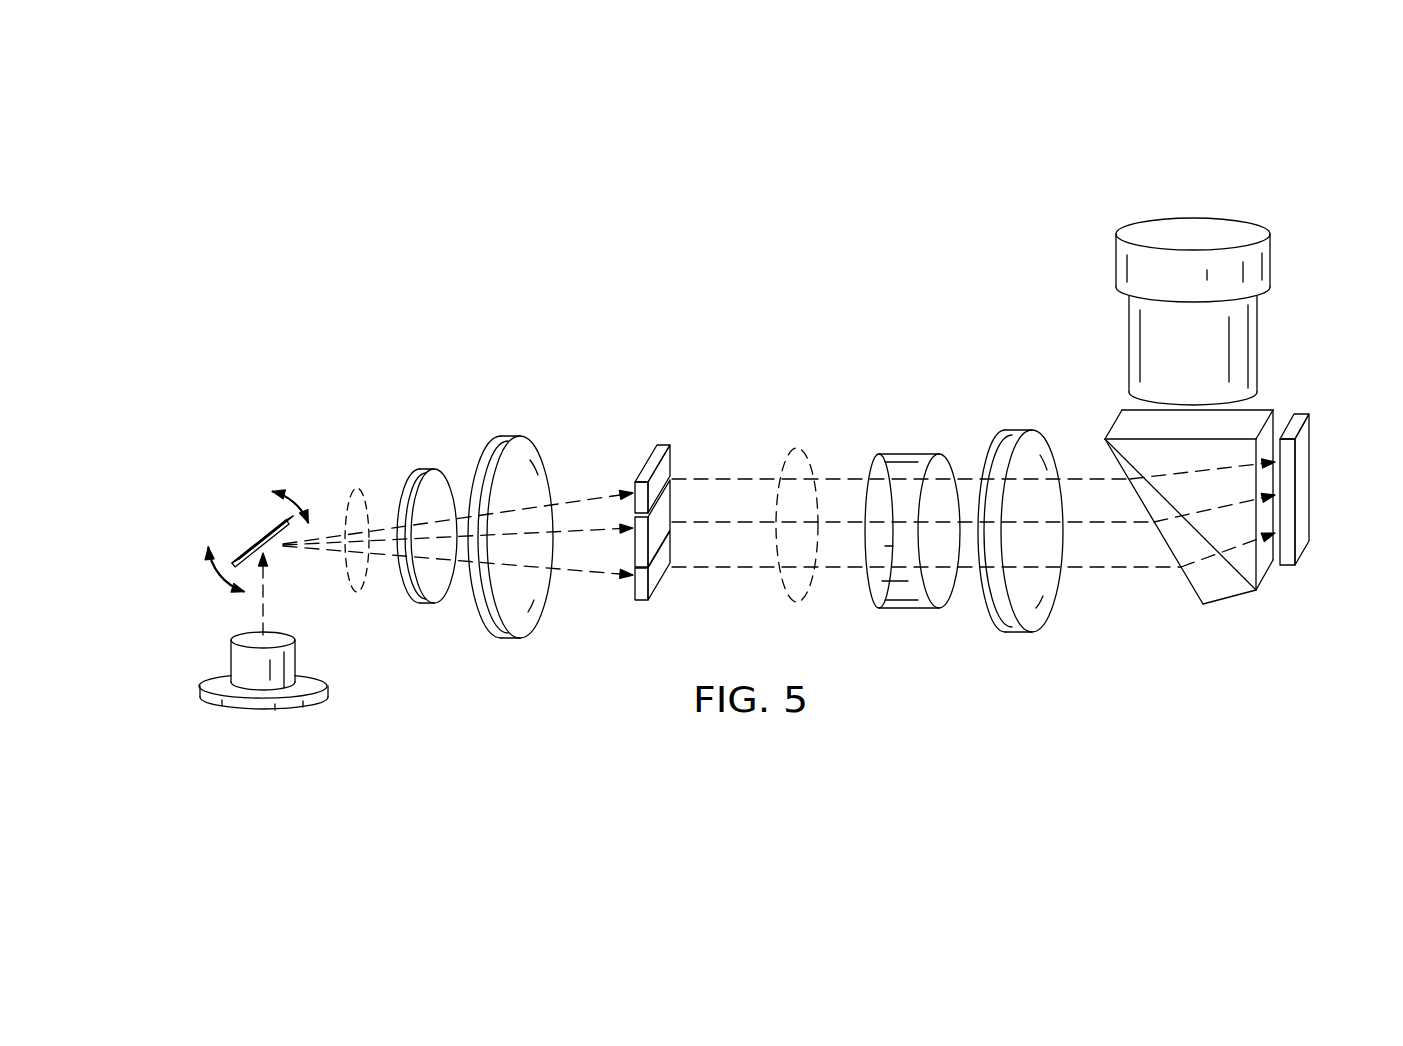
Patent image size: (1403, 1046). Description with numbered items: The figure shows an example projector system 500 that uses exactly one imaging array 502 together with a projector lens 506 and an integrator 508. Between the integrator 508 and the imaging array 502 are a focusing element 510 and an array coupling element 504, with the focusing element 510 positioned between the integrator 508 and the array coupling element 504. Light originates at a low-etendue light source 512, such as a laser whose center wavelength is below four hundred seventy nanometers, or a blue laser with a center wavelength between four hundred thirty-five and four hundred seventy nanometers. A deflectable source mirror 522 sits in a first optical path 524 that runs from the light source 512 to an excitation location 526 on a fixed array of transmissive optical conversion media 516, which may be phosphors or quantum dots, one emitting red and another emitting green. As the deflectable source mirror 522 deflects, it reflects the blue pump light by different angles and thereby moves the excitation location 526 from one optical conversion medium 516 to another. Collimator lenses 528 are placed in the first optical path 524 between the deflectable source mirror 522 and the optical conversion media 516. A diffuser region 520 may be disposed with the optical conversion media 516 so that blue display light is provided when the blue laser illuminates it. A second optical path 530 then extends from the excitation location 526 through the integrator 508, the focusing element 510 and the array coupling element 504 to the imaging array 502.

The projector system 500 is at (394, 360).
The imaging array 502 is at (1310, 470).
The array coupling element 504 is at (1232, 605).
The projector lens 506 is at (1259, 344).
The integrator 508 is at (912, 610).
The focusing element 510 is at (1018, 633).
The low-etendue light source 512 is at (200, 690).
The optical conversion media 516 is at (635, 483).
The diffuser region 520 is at (634, 588).
The deflectable source mirror 522 is at (250, 540).
The first optical path 524 is at (348, 496).
The excitation location 526 is at (671, 460).
The collimator lenses 528 is at (423, 606).
The second optical path 530 is at (815, 442).